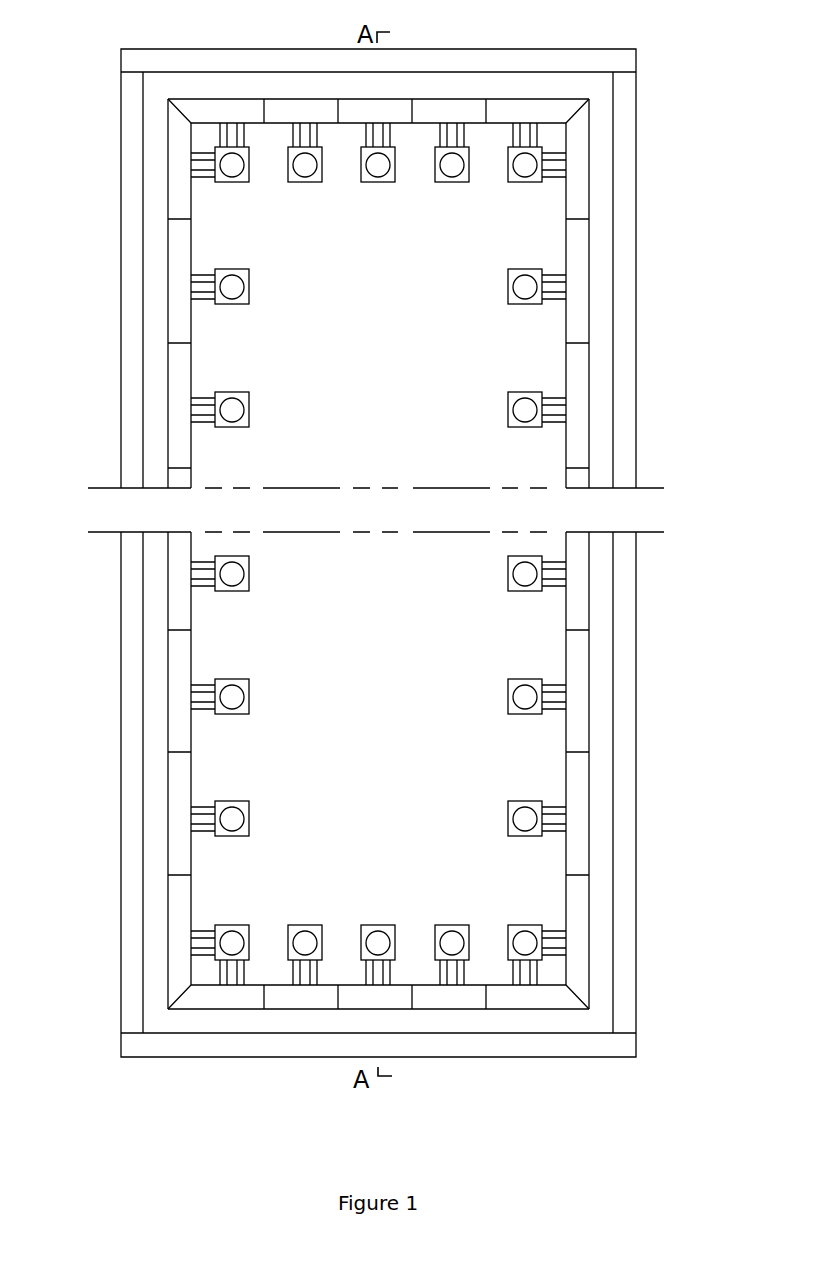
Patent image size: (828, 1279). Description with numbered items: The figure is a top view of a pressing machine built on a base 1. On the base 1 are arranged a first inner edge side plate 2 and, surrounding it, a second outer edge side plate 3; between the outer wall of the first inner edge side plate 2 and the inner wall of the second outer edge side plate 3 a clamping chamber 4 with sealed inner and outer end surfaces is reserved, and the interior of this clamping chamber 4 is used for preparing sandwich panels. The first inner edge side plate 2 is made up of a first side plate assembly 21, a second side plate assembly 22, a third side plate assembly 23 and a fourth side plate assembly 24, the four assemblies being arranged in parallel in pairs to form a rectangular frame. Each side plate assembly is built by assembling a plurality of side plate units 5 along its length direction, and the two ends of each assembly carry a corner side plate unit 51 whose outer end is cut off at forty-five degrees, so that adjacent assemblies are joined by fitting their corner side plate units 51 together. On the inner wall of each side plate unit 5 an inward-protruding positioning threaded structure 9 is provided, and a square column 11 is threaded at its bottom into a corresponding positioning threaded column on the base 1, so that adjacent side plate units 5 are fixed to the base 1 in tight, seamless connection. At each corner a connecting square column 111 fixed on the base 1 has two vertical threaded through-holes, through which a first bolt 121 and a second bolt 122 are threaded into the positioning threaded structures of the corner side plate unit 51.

The base 1 is at (533, 234).
The first inner edge side plate 2 is at (372, 555).
The first side plate assembly 21 is at (590, 332).
The second side plate assembly 22 is at (447, 98).
The third side plate assembly 23 is at (167, 662).
The fourth side plate assembly 24 is at (422, 1010).
The second outer edge side plate 3 is at (623, 836).
The clamping chamber 4 is at (604, 566).
The side plate unit 5 is at (583, 695).
The corner side plate unit 51 is at (176, 136).
The positioning threaded structure 9 is at (197, 155).
The square column 11 is at (223, 397).
The connecting square column 111 is at (243, 152).
The first bolt 121 is at (230, 142).
The second bolt 122 is at (198, 165).